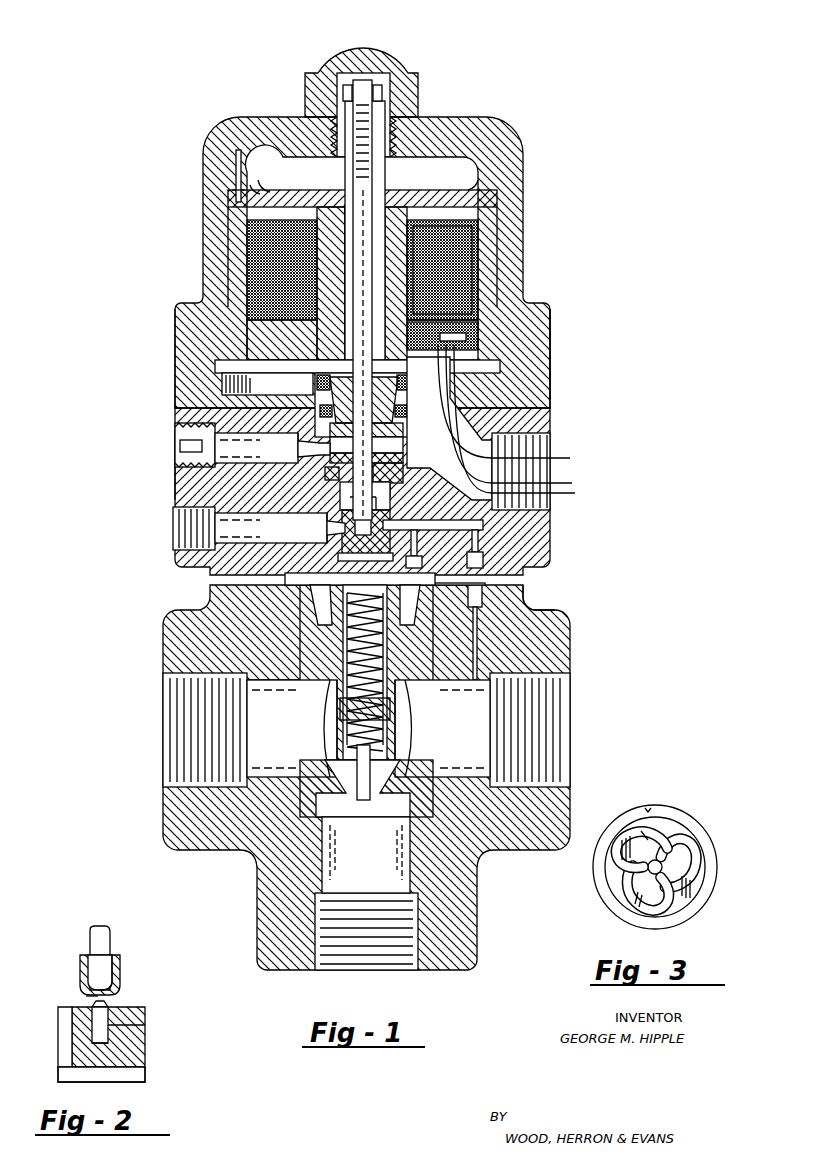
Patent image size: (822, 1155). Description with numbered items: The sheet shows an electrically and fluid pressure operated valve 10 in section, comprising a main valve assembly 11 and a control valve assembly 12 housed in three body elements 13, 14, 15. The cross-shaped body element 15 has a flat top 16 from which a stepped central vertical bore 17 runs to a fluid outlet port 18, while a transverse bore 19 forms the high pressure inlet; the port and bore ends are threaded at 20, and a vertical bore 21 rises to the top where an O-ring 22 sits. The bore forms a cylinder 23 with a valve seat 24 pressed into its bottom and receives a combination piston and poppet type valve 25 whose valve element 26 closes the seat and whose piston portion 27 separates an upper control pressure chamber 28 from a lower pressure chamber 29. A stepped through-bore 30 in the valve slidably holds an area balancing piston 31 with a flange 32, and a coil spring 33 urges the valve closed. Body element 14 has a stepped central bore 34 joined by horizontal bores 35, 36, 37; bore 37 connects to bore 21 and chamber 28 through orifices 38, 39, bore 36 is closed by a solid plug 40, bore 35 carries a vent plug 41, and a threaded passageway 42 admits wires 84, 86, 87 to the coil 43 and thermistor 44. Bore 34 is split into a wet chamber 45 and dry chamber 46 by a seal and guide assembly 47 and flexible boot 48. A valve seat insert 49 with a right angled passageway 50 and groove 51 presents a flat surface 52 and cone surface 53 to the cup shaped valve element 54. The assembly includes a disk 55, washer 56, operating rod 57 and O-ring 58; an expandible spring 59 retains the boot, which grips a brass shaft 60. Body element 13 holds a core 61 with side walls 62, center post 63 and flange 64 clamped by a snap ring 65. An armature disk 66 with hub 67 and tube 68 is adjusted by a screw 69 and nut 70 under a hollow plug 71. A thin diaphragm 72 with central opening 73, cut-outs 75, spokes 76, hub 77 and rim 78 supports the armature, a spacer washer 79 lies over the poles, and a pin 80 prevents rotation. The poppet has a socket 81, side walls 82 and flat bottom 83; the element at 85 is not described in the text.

In FIG. 1, the electrically and fluid pressure operated valve 10 is at (152, 491).
In FIG. 1, the main valve assembly 11 is at (580, 640).
In FIG. 1, the control valve assembly 12 is at (582, 321).
In FIG. 1, the body element 13 is at (505, 131).
In FIG. 1, the body element 14 is at (555, 533).
In FIG. 1, the body element 15 is at (560, 602).
In FIG. 1, the flat top 16 is at (505, 583).
In FIG. 1, the stepped central vertical bore 17 is at (409, 722).
In FIG. 1, the fluid outlet port 18 is at (393, 960).
In FIG. 1, the transverse bore 19 is at (298, 728).
In FIG. 1, the threads 20 is at (178, 749).
In FIG. 1, the vertical bore 21 is at (480, 637).
In FIG. 1, the O-ring 22 is at (489, 599).
In FIG. 1, the cylinder 23 is at (298, 657).
In FIG. 1, the valve seat 24 is at (318, 795).
In FIG. 1, the combination piston and poppet type valve 25 is at (422, 625).
In FIG. 1, the valve element 26 is at (328, 756).
In FIG. 1, the piston portion 27 is at (300, 620).
In FIG. 1, the upper control pressure chamber 28 is at (309, 578).
In FIG. 1, the lower pressure chamber 29 is at (409, 693).
In FIG. 1, the stepped central through-bore 30 is at (345, 701).
In FIG. 1, the area balancing piston 31 is at (343, 657).
In FIG. 1, the flange 32 is at (365, 611).
In FIG. 1, the compression coil spring 33 is at (386, 646).
In FIG. 1, the stepped central bore 34 is at (378, 517).
In FIG. 1, the horizontal bore 35 is at (290, 445).
In FIG. 1, the horizontal bore 36 is at (290, 528).
In FIG. 1, the horizontal bore 37 is at (481, 528).
In FIG. 1, the orifice 38 is at (477, 548).
In FIG. 1, the orifice 39 is at (419, 550).
In FIG. 1, the solid plug 40 is at (175, 532).
In FIG. 1, the breather or vent plug 41 is at (178, 432).
In FIG. 1, the internally threaded passageway 42 is at (549, 440).
In FIG. 1, the electric coil 43 is at (450, 272).
In FIG. 1, the thermistor 44 is at (470, 346).
In FIG. 1, the wet chamber 45 is at (344, 502).
In FIG. 1, the dry chamber 46 is at (396, 421).
In FIG. 1, the seal and guide assembly 47 is at (340, 470).
In FIG. 1, the flexible boot 48 is at (320, 392).
In FIG. 1, the valve seat insert 49 is at (344, 552).
In FIG. 2, the valve seat insert 49 is at (92, 1043).
In FIG. 2, the right angled passageway 50 is at (103, 1025).
In FIG. 2, the fluid conducting groove 51 is at (65, 1068).
In FIG. 2, the circular flat surface 52 is at (108, 1000).
In FIG. 2, the cone shaped tapered surface 53 is at (75, 1013).
In FIG. 1, the cup shaped valve element 54 is at (381, 502).
In FIG. 2, the cup shaped valve element 54 is at (82, 962).
In FIG. 1, the circular disk 55 is at (392, 492).
In FIG. 1, the washer 56 is at (388, 467).
In FIG. 1, the operating rod 57 is at (372, 451).
In FIG. 2, the operating rod 57 is at (93, 936).
In FIG. 1, the O-ring 58 is at (334, 482).
In FIG. 1, the expandible coil spring 59 is at (401, 386).
In FIG. 1, the non-magnetic brass shaft 60 is at (364, 400).
In FIG. 1, the core 61 is at (265, 337).
In FIG. 1, the side walls 62 is at (240, 264).
In FIG. 1, the hollow center post 63 is at (331, 210).
In FIG. 1, the peripheral flange 64 is at (248, 362).
In FIG. 1, the snap ring 65 is at (267, 385).
In FIG. 1, the armature disk 66 is at (442, 191).
In FIG. 1, the hollow hub 67 is at (381, 176).
In FIG. 1, the tube 68 is at (345, 340).
In FIG. 1, the adjusting screw 69 is at (358, 88).
In FIG. 1, the locking nut 70 is at (343, 102).
In FIG. 1, the hollow plug 71 is at (400, 63).
In FIG. 1, the thin diaphragm 72 is at (278, 191).
In FIG. 3, the thin diaphragm 72 is at (640, 806).
In FIG. 3, the central opening 73 is at (641, 831).
In FIG. 3, the cut out 75 is at (690, 840).
In FIG. 3, the spokes 76 is at (625, 846).
In FIG. 3, the hub 77 is at (665, 865).
In FIG. 3, the rim 78 is at (689, 815).
In FIG. 1, the spacer washer 79 is at (500, 208).
In FIG. 1, the non-magnetic pin 80 is at (236, 182).
In FIG. 2, the semi-spherical socket 81 is at (112, 984).
In FIG. 2, the interior side walls 82 is at (118, 961).
In FIG. 2, the flat bottom 83 is at (98, 998).
In FIG. 1, the insulated electric wire 84 is at (582, 498).
In FIG. 1, the terminal 85 is at (500, 334).
In FIG. 1, the insulated electric wire 86 is at (580, 462).
In FIG. 1, the insulated electric wire 87 is at (581, 486).